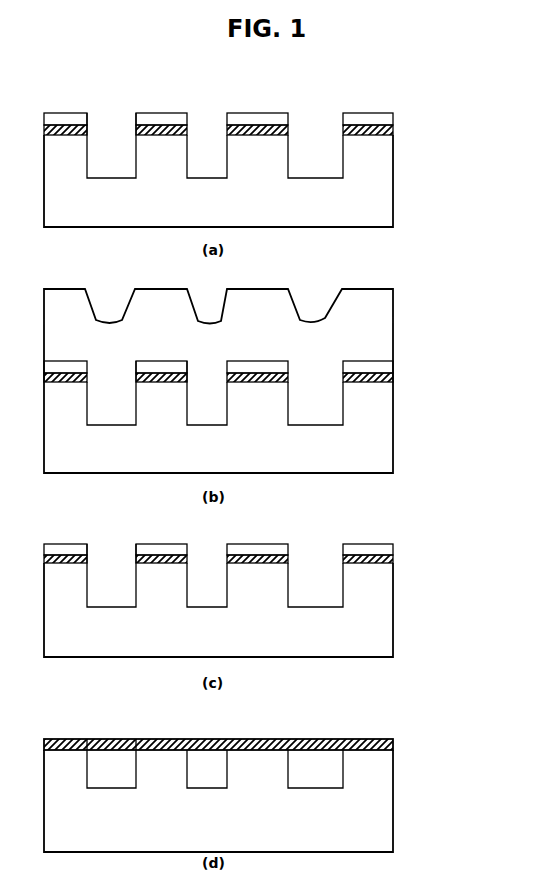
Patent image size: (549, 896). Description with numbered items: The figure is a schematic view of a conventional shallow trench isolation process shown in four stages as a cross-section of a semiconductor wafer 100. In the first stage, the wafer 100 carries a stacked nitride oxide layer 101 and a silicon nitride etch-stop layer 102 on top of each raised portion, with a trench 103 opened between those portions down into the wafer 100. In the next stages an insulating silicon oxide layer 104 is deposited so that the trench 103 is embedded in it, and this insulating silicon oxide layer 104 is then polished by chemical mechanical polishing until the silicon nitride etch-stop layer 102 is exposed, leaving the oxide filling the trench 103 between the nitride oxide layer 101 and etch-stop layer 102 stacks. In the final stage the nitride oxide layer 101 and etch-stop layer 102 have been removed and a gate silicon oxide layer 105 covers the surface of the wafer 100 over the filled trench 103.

The substrate 100 is at (400, 181).
The first layer (hard mask) 101 is at (400, 134).
The second layer 102 is at (400, 116).
The opening / recess 103 is at (108, 145).
The trench 104 is at (108, 576).
The planar layer 105 is at (400, 751).